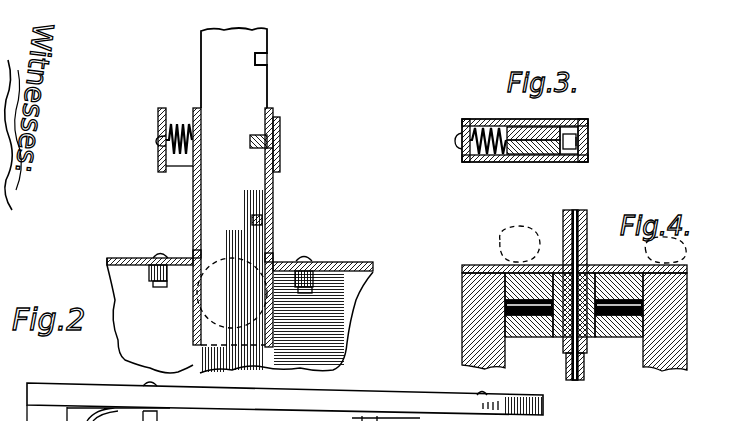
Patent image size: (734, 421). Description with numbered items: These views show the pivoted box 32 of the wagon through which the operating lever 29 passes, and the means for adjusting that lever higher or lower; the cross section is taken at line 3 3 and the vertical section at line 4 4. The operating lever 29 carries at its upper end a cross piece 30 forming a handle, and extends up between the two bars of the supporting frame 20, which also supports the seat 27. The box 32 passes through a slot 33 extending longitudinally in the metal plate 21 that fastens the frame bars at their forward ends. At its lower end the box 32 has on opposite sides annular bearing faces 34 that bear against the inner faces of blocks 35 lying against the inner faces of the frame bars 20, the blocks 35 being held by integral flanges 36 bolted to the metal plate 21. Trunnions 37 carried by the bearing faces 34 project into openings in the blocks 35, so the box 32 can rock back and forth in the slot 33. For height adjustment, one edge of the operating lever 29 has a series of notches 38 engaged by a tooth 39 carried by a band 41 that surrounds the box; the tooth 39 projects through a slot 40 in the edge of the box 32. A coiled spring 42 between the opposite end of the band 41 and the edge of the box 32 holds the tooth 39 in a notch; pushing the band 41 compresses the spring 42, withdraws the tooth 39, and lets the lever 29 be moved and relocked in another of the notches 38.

In FIG. 2, the section line 3 3 is at (325, 151).
In FIG. 2, the section line 4 4 is at (233, 262).
In FIG. 2, the supporting frame 20 is at (338, 320).
In FIG. 4, the supporting frame 20 is at (463, 352).
In FIG. 2, the metal plate 21 is at (340, 268).
In FIG. 2, the seat 27 is at (346, 403).
In FIG. 3, the operating lever 29 is at (557, 127).
In FIG. 4, the operating lever 29 is at (577, 381).
In FIG. 3, the cross piece 30 is at (733, 90).
In FIG. 2, the box 32 is at (273, 191).
In FIG. 3, the box 32 is at (560, 117).
In FIG. 4, the box 32 is at (563, 228).
In FIG. 2, the slot 33 is at (190, 259).
In FIG. 4, the slot 33 is at (601, 266).
In FIG. 3, the annular bearing faces 34 is at (578, 160).
In FIG. 4, the annular bearing faces 34 is at (560, 338).
In FIG. 4, the blocks 35 is at (524, 338).
In FIG. 2, the integral flanges 36 is at (181, 276).
In FIG. 4, the integral flanges 36 is at (593, 246).
In FIG. 4, the trunnions 37 is at (505, 302).
In FIG. 2, the notches 38 is at (262, 59).
In FIG. 3, the notches 38 is at (584, 122).
In FIG. 2, the tooth 39 is at (257, 135).
In FIG. 3, the tooth 39 is at (588, 147).
In FIG. 2, the slot 40 is at (264, 152).
In FIG. 2, the band 41 is at (181, 164).
In FIG. 3, the band 41 is at (518, 162).
In FIG. 2, the coiled spring 42 is at (186, 125).
In FIG. 3, the coiled spring 42 is at (472, 162).